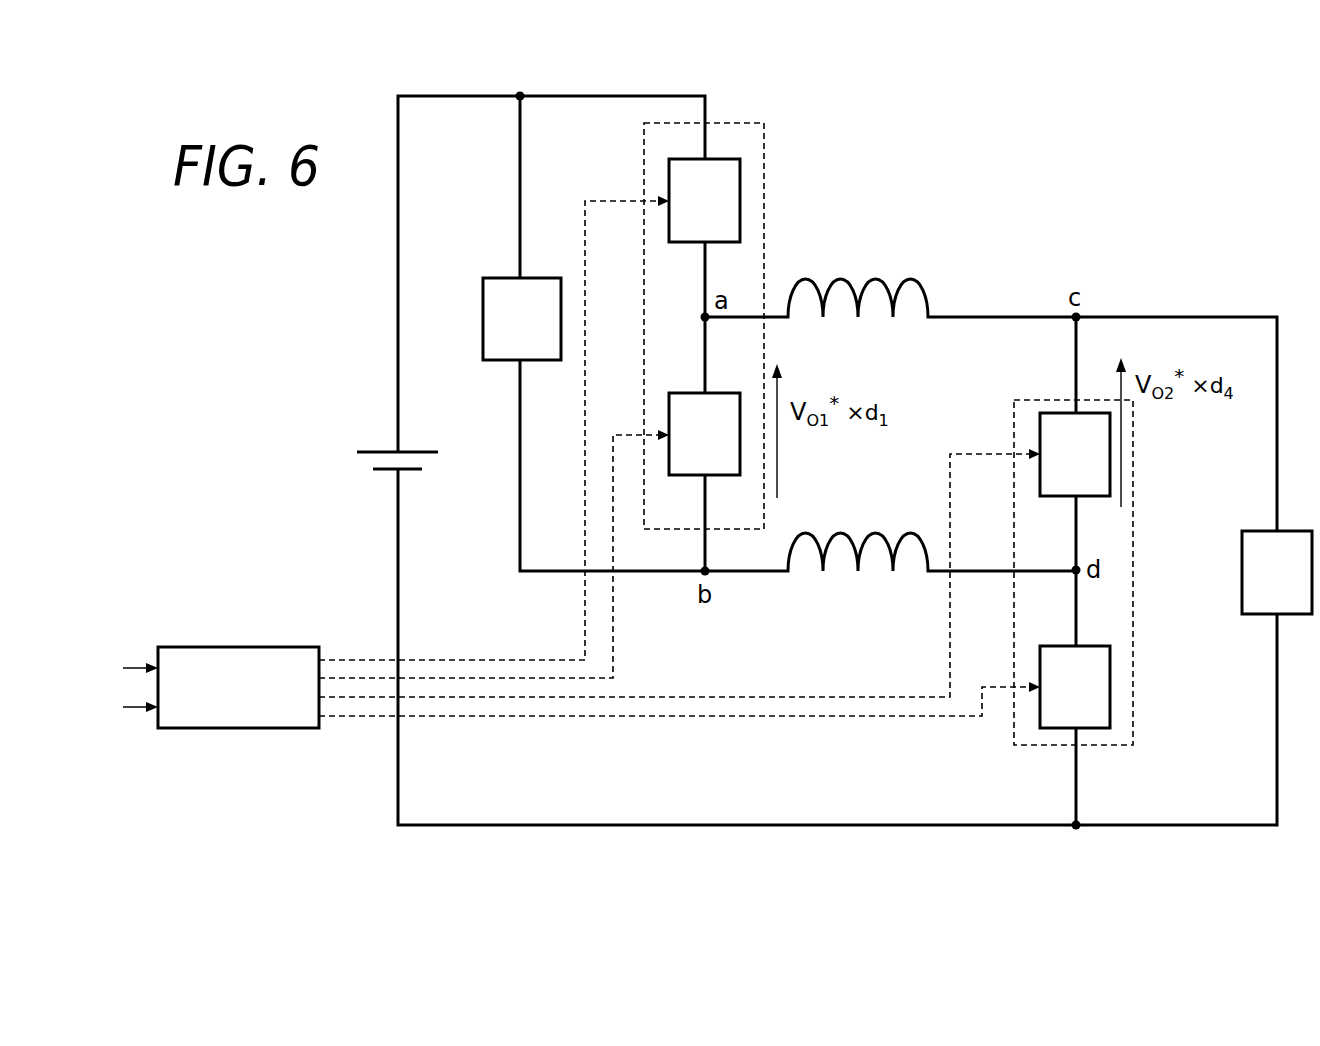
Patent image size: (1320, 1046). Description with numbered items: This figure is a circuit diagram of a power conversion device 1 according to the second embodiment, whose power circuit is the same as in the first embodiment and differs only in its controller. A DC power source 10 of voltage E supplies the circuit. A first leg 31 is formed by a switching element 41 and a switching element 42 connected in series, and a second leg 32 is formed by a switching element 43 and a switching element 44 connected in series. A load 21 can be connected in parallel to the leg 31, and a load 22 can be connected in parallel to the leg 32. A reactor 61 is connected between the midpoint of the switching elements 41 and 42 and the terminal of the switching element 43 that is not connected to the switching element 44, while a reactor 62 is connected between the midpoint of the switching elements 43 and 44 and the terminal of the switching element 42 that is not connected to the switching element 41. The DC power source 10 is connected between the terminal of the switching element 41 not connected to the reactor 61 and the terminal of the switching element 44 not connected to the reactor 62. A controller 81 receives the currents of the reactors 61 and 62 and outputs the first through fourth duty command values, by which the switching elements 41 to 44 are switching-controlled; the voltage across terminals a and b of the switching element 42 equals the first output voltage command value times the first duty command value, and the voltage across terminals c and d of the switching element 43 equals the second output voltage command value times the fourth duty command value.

The power conversion device 1 is at (1112, 128).
The DC power source 10 is at (378, 458).
The load 21 is at (497, 278).
The load 22 is at (1262, 531).
The leg 31 is at (766, 130).
The leg 32 is at (1033, 400).
The switching element 41 is at (718, 159).
The switching element 42 is at (694, 393).
The switching element 43 is at (1084, 497).
The switching element 44 is at (1084, 729).
The reactor 61 is at (876, 281).
The reactor 62 is at (876, 534).
The controller 81 is at (236, 647).